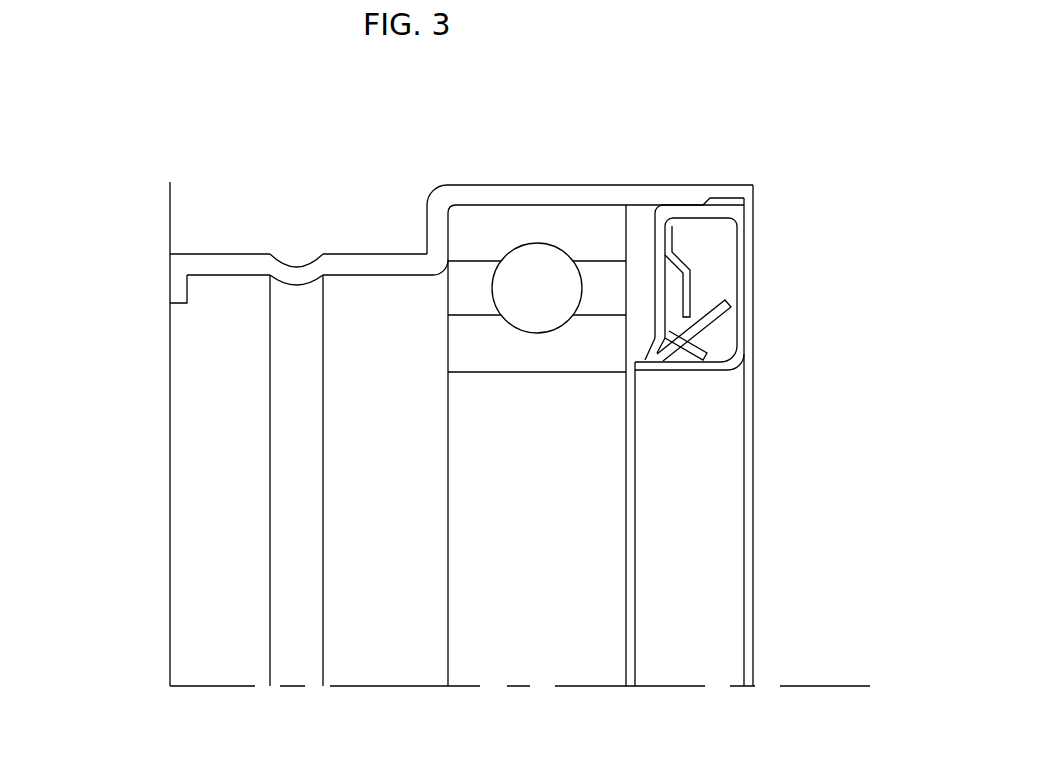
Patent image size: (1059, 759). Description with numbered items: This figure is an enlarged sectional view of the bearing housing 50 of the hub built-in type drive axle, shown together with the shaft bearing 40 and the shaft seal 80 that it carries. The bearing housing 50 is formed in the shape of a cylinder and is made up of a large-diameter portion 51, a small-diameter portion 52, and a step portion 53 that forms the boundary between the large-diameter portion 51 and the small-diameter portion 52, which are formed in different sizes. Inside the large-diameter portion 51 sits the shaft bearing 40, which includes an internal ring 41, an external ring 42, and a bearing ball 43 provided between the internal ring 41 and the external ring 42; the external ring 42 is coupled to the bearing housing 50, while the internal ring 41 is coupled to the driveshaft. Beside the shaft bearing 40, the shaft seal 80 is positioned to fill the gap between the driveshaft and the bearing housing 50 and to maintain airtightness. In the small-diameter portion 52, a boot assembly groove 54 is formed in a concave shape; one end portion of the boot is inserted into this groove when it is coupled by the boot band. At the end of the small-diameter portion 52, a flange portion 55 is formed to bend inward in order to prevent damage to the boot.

The shaft bearing 40 is at (666, 279).
The internal ring 41 is at (573, 357).
The external ring 42 is at (523, 222).
The bearing ball 43 is at (552, 280).
The bearing housing 50 is at (729, 175).
The large-diameter portion 51 is at (672, 200).
The small-diameter portion 52 is at (230, 267).
The step portion 53 is at (437, 232).
The boot assembly groove 54 is at (298, 262).
The flange portion 55 is at (180, 287).
The shaft seal 80 is at (680, 292).